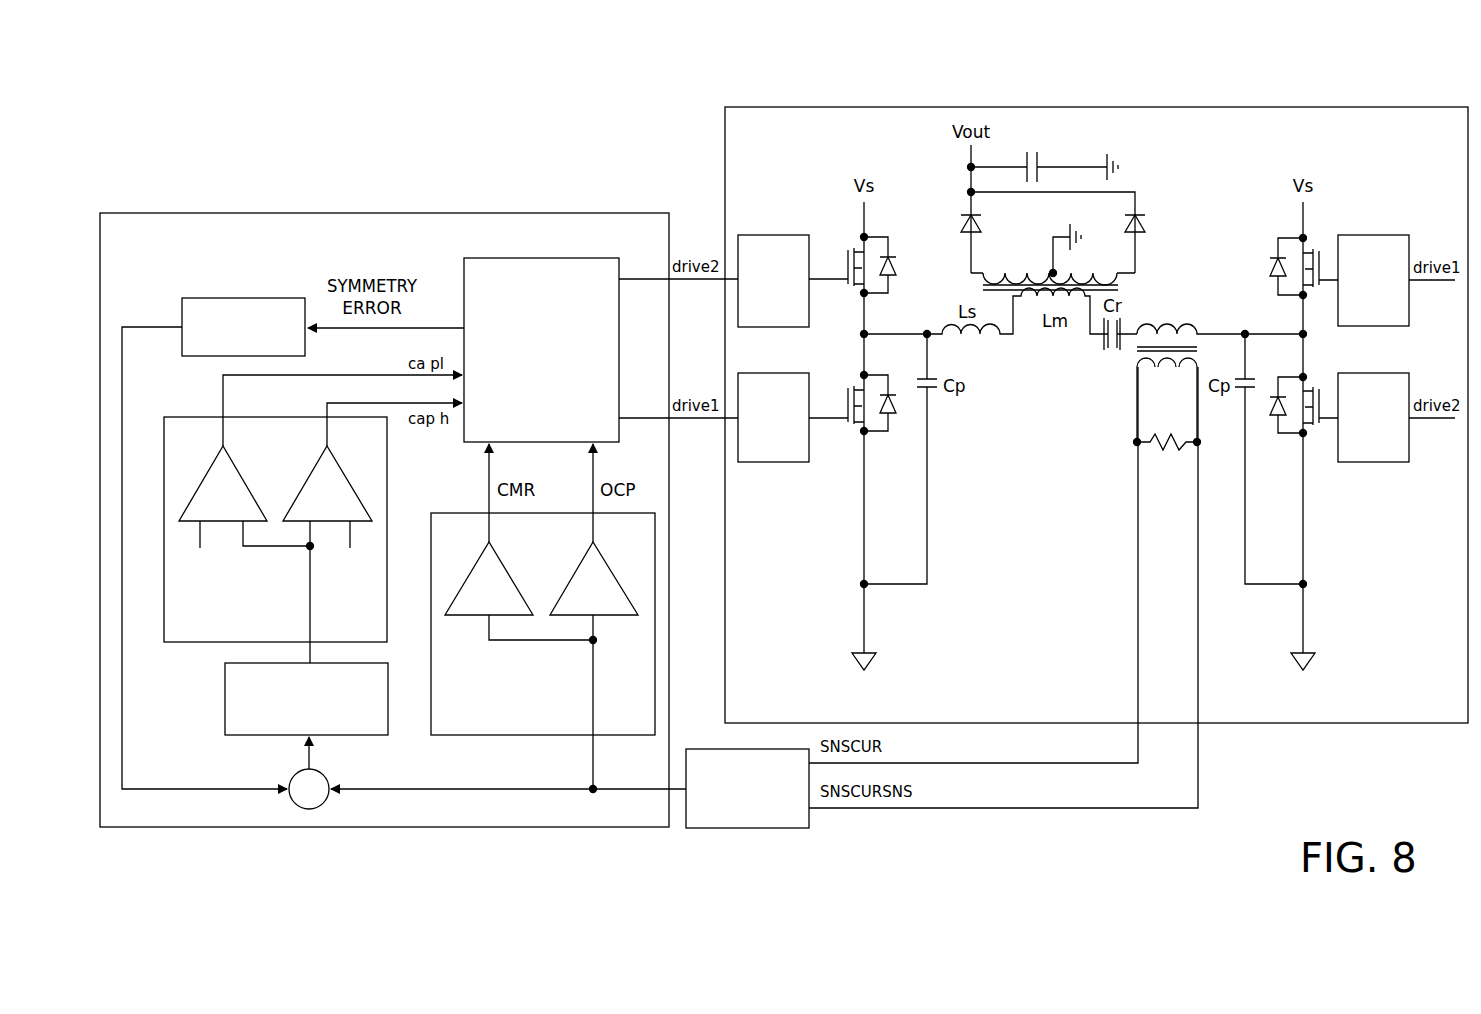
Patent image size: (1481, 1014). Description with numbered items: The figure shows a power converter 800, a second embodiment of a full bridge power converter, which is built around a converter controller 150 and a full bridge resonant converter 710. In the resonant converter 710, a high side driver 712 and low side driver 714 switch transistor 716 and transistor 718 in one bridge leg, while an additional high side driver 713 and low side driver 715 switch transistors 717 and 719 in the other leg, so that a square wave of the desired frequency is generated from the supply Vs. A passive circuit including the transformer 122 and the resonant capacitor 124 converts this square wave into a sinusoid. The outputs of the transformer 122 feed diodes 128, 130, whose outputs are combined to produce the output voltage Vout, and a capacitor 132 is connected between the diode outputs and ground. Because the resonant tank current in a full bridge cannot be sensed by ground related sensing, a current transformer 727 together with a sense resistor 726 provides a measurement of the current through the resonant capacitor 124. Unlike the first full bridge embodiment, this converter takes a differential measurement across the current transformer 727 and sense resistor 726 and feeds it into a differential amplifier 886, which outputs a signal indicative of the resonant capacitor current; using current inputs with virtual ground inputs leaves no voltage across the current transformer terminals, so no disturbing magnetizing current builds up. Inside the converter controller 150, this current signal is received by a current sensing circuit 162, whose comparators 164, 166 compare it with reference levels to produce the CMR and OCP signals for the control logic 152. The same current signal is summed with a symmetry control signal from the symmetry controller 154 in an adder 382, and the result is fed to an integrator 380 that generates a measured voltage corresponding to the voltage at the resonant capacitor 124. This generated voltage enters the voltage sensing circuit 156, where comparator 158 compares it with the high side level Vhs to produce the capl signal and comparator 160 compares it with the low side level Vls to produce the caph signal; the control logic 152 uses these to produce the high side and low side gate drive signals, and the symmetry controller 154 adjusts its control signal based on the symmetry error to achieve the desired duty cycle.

The power converter 800 is at (180, 130).
The converter controller 150 is at (447, 212).
The converter controller 152 is at (573, 258).
The symmetry controller 154 is at (230, 298).
The voltage sensing circuit 156 is at (275, 540).
The comparator 158 is at (200, 478).
The comparator 160 is at (300, 480).
The current sensing circuit 162 is at (535, 651).
The comparator 164 is at (520, 588).
The comparator 166 is at (620, 572).
The integrator 380 is at (225, 697).
The adder 382 is at (298, 772).
The resonant converter 710 is at (1400, 107).
The high side driver 712 is at (773, 235).
The high side driver 713 is at (1370, 235).
The low side driver 714 is at (763, 462).
The low side driver 715 is at (1360, 462).
The transistor 716 is at (896, 283).
The transistor 717 is at (1270, 255).
The transistor 718 is at (895, 436).
The transistor 719 is at (1278, 436).
The transformer 122 is at (1013, 272).
The resonant capacitor 124 is at (1112, 350).
The diode 128 is at (958, 226).
The diode 130 is at (1145, 228).
The capacitor 132 is at (1035, 152).
The current transformer 727 is at (1165, 334).
The sense resistor 726 is at (1168, 448).
The differential amplifier 886 is at (785, 828).